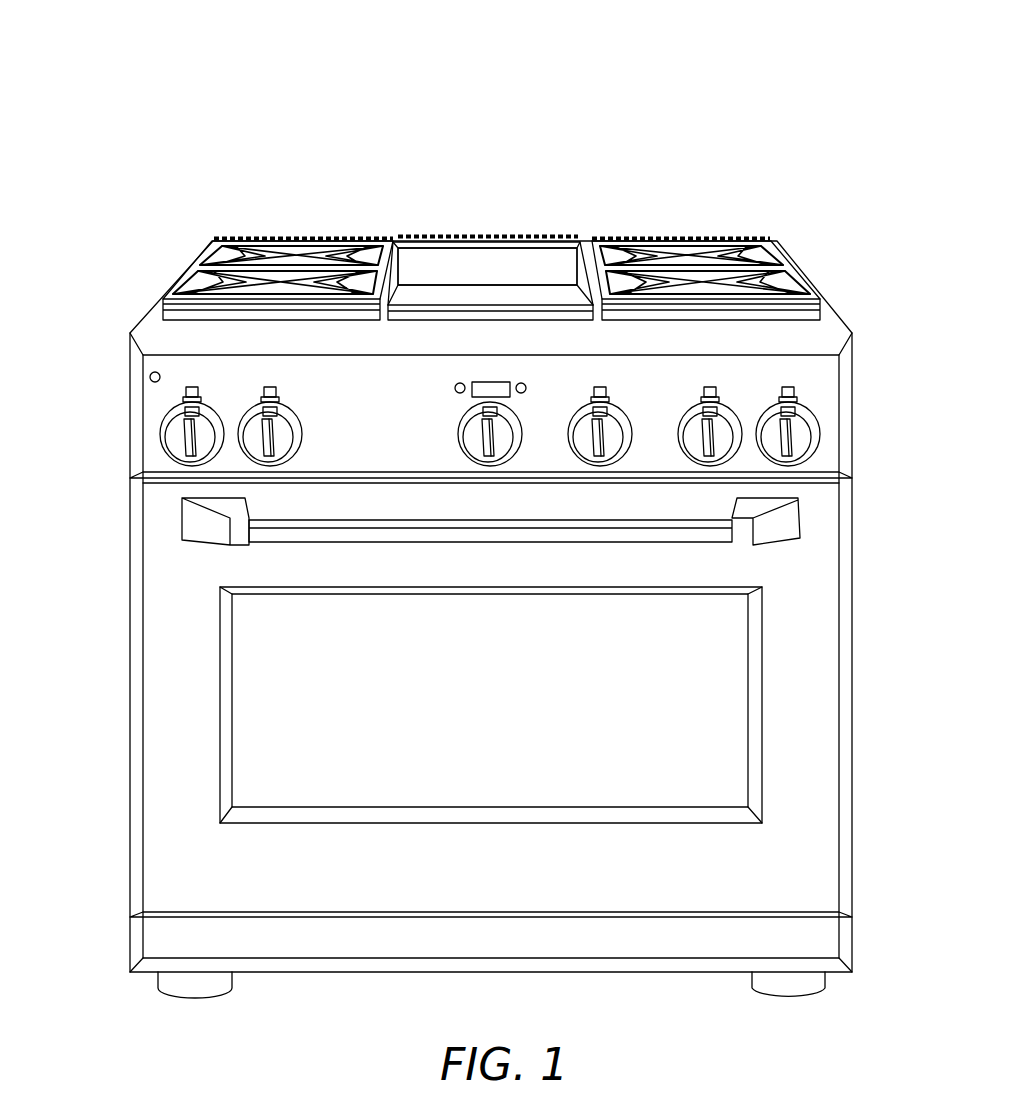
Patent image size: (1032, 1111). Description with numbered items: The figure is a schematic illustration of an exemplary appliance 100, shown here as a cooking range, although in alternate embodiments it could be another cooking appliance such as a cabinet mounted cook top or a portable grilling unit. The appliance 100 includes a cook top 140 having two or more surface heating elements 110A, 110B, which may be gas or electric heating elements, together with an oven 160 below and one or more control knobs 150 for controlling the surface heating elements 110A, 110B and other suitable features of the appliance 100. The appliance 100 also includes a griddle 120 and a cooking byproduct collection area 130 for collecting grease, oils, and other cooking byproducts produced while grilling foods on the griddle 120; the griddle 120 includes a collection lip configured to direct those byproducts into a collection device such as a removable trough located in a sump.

The appliance 100 is at (707, 104).
The surface heating element 110A is at (278, 198).
The surface heating element 110B is at (716, 213).
The griddle 120 is at (520, 283).
The cooking byproduct collection area 130 is at (423, 322).
The cook top 140 is at (418, 225).
The control knob 150 is at (822, 432).
The oven 160 is at (162, 718).